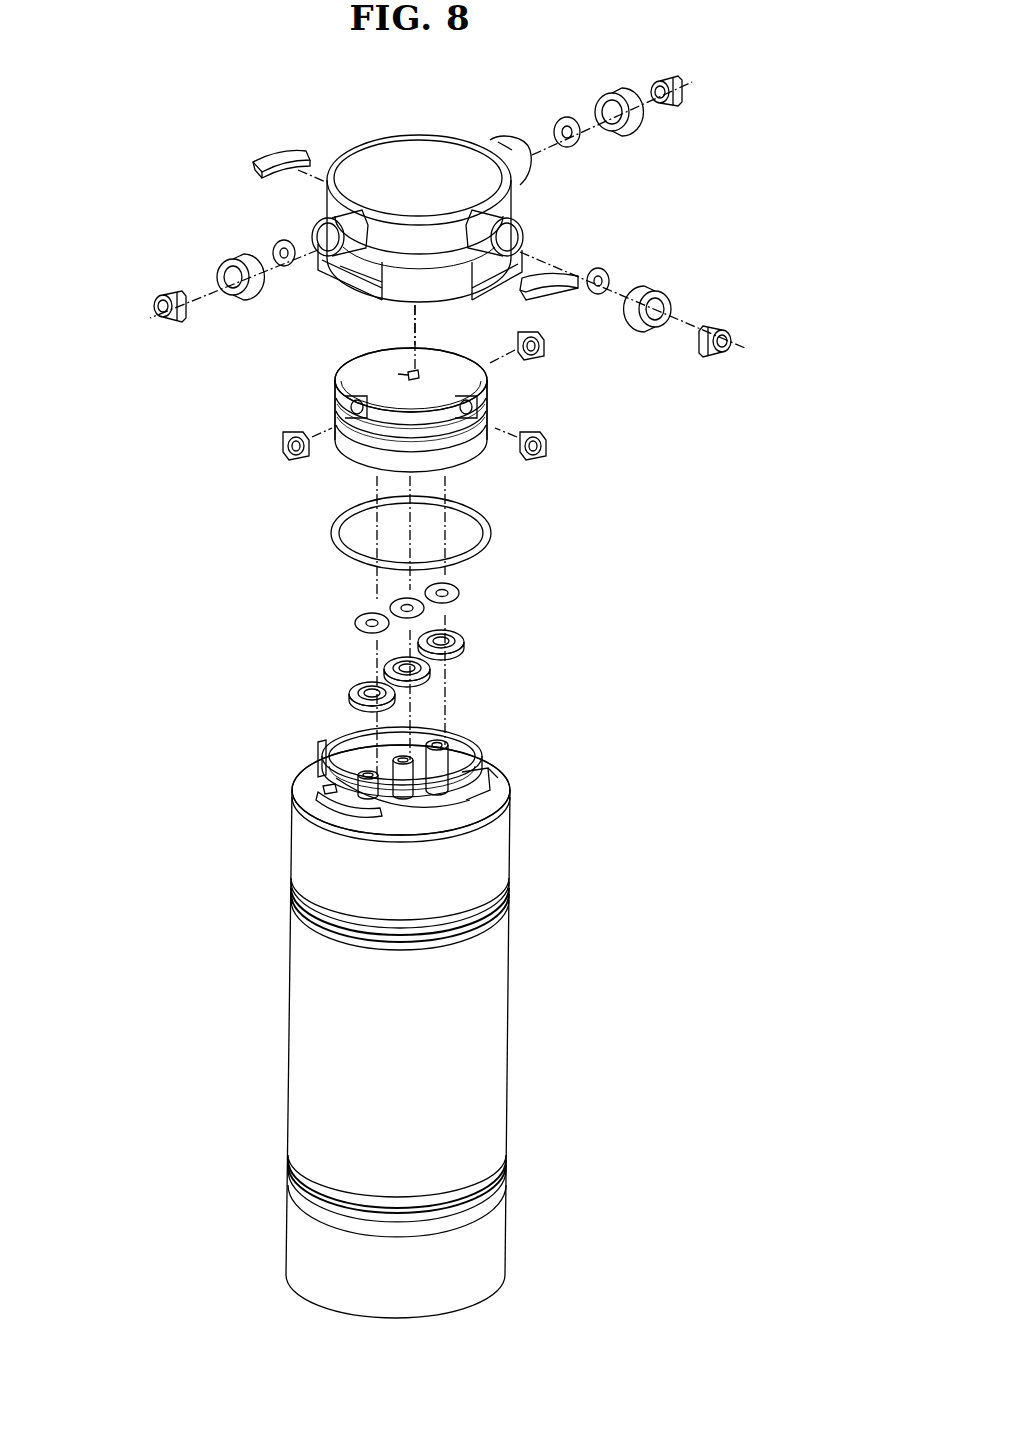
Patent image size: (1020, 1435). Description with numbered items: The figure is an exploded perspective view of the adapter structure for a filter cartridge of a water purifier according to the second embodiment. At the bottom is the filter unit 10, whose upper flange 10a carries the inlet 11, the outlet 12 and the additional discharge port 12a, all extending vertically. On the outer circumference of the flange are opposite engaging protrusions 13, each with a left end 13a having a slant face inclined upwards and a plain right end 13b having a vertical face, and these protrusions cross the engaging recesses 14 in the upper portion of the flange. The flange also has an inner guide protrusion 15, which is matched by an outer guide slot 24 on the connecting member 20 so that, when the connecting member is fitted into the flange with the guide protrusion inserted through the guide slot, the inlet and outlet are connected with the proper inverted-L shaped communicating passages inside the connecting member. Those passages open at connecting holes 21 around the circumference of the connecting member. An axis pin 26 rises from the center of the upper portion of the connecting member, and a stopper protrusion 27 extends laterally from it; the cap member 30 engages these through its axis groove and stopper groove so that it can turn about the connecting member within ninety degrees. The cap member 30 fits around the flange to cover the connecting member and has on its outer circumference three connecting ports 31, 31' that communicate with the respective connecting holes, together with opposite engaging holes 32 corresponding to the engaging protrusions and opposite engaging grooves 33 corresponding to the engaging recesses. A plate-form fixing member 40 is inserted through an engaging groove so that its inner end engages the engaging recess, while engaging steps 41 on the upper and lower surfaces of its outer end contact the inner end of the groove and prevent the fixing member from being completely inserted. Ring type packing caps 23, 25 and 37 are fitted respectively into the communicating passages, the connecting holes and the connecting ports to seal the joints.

The filter unit 10 is at (282, 1060).
The flange 10a is at (450, 727).
The inlet 11 is at (463, 737).
The outlet 12 is at (460, 833).
The discharge port 12a is at (320, 765).
The engaging protrusion 13 is at (337, 803).
The left end 13a is at (323, 790).
The plain right end 13b is at (377, 837).
The engaging recess 14 is at (343, 740).
The inner guide protrusion 15 is at (500, 772).
The connecting member 20 is at (342, 462).
The connecting hole 21 is at (492, 402).
The ring type packing cap 23 is at (350, 690).
The outer guide slot 24 is at (472, 462).
The ring type packing cap 25 is at (285, 440).
The axis pin 26 is at (405, 376).
The stopper protrusion 27 is at (412, 352).
The cap member 30 is at (522, 190).
The connecting port 31 is at (262, 228).
The connecting port 31' is at (583, 225).
The engaging hole 32 is at (325, 262).
The engaging groove 33 is at (500, 272).
The ring type packing cap 37 is at (668, 293).
The fixing member 40 is at (250, 173).
The engaging step 41 is at (290, 160).